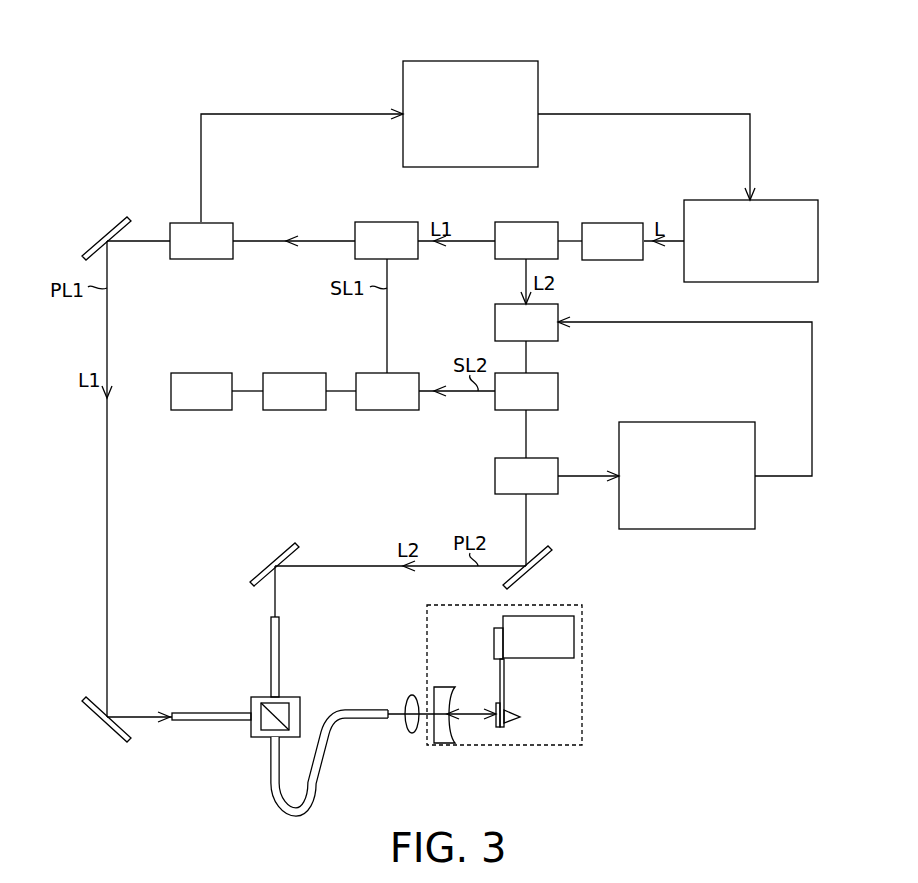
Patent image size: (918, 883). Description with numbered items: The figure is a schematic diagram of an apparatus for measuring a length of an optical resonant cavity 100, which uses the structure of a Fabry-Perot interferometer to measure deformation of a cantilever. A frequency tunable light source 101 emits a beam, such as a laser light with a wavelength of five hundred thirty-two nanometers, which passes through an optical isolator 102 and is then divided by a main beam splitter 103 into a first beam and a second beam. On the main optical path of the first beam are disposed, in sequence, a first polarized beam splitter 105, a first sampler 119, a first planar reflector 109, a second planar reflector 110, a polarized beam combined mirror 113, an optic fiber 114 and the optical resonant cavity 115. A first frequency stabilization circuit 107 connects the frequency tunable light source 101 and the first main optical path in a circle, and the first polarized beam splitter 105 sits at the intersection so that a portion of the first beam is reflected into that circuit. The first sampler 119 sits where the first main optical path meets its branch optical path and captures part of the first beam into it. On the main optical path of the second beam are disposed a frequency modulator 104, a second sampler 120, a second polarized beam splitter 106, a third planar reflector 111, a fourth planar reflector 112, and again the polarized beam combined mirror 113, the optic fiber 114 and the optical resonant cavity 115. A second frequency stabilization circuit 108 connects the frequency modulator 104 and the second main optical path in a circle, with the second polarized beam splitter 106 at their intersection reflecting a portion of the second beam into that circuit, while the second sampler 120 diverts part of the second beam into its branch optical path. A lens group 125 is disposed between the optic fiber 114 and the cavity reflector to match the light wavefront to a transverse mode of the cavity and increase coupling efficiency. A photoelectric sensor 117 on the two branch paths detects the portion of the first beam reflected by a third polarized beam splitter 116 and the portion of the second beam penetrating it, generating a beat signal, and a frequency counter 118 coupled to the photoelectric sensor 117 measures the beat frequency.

The apparatus for measuring a length of an optical resonant cavity 100 is at (88, 29).
The frequency tunable light source 101 is at (789, 200).
The optical isolator 102 is at (610, 223).
The main beam splitter 103 is at (524, 222).
The frequency modulator 104 is at (503, 304).
The first polarized beam splitter 105 is at (180, 223).
The second polarized beam splitter 106 is at (504, 458).
The first frequency stabilization circuit 107 is at (470, 61).
The second frequency stabilization circuit 108 is at (686, 422).
The first planar reflector 109 is at (118, 222).
The second planar reflector 110 is at (105, 721).
The third planar reflector 111 is at (544, 557).
The fourth planar reflector 112 is at (263, 566).
The polarized beam combined mirror 113 is at (254, 727).
The optic fiber 114 is at (197, 722).
The optical resonant cavity 115 is at (582, 676).
The third polarized beam splitter 116 is at (367, 373).
The photoelectric sensor 117 is at (295, 373).
The frequency counter 118 is at (202, 373).
The first sampler 119 is at (386, 222).
The second sampler 120 is at (558, 394).
The lens group 125 is at (410, 695).